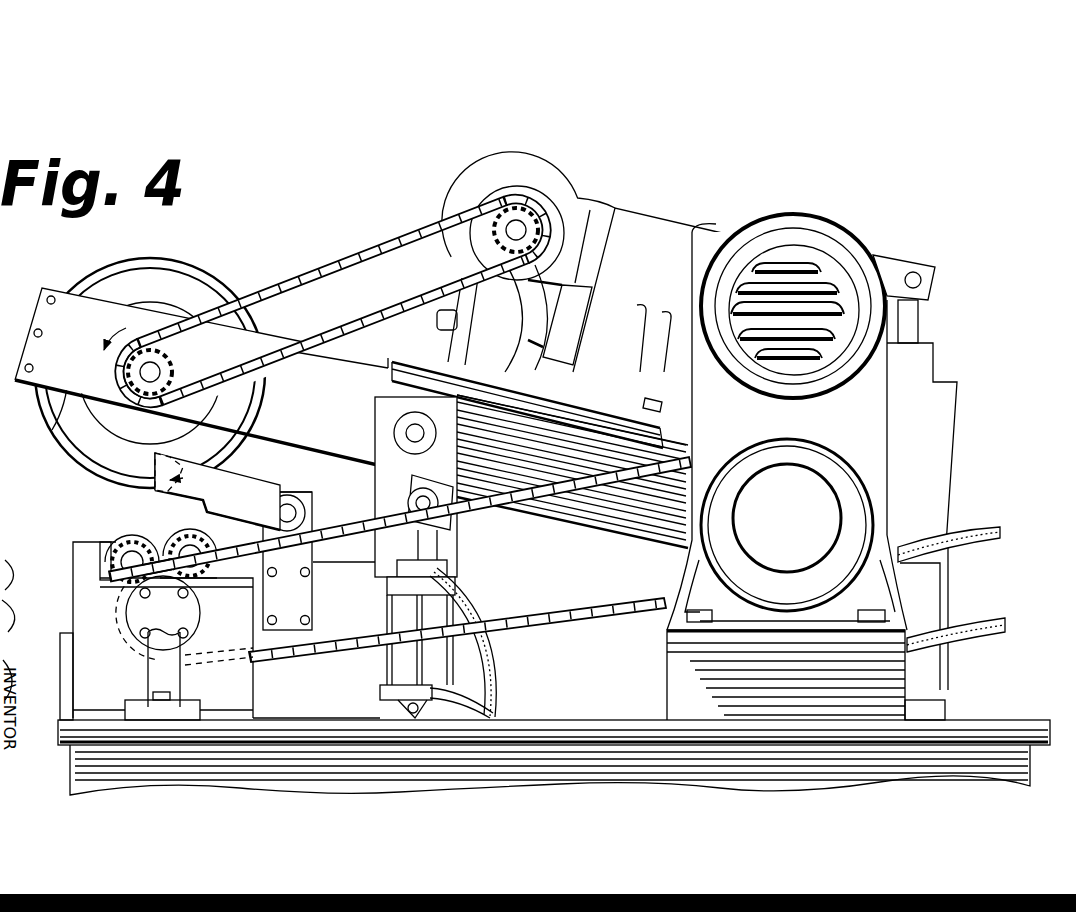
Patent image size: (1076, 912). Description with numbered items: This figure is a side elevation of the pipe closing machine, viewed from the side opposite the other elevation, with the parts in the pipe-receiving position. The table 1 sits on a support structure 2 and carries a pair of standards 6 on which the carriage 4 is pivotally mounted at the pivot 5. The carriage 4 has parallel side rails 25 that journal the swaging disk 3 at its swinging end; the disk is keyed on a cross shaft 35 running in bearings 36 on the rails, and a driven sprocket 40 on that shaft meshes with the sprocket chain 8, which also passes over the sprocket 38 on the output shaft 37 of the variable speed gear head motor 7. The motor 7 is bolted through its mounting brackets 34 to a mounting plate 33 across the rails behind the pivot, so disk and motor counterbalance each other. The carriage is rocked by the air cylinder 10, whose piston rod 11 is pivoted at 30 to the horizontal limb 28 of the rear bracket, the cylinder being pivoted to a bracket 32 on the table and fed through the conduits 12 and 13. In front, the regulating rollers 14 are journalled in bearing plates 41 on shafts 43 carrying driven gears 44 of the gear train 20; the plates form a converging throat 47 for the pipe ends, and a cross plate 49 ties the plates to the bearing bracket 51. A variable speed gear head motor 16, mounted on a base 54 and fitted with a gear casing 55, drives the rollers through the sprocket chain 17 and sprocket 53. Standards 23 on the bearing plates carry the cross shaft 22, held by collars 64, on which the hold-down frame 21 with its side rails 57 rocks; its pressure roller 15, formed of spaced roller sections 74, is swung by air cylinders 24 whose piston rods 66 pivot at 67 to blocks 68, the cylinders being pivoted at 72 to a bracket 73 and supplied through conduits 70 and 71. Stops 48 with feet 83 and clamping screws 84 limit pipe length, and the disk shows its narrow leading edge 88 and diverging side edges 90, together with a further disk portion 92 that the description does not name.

The table 1 is at (1025, 718).
The support structure 2 is at (822, 755).
The swaging disk 3 is at (194, 287).
The carriage 4 is at (51, 289).
The pivot 5 is at (414, 432).
The standards 6 is at (374, 429).
The gear head motor 7 is at (644, 228).
The sprocket chain 8 is at (410, 243).
The air cylinder 10 is at (925, 447).
The piston rod 11 is at (913, 318).
The conduit 12 is at (978, 532).
The conduit 13 is at (987, 622).
The regulating rollers 14 is at (126, 543).
The pressure roller 15 is at (243, 481).
The gear head motor 16 is at (794, 233).
The sprocket chain 17 is at (617, 612).
The gear train 20 is at (105, 562).
The hold-down frame 21 is at (286, 488).
The cross shaft 22 is at (297, 514).
The standards 23 is at (300, 608).
The air cylinders 24 is at (402, 663).
The side rails 25 is at (618, 497).
The horizontal limb 28 is at (890, 260).
The pivot 30 is at (921, 281).
The bracket 32 is at (942, 708).
The mounting plate 33 is at (582, 404).
The mounting brackets 34 is at (470, 366).
The cross shaft 35 is at (170, 390).
The bearings 36 is at (116, 373).
The output shaft 37 is at (519, 230).
The sprocket 38 is at (515, 221).
The driven sprocket 40 is at (170, 358).
The bearing plates 41 is at (316, 697).
The shafts 43 is at (135, 556).
The driven gear 44 is at (200, 546).
The throat 47 is at (164, 557).
The stops 48 is at (180, 684).
The cross plate 49 is at (71, 679).
The bearing bracket 51 is at (84, 605).
The sprocket 53 is at (184, 581).
The base 54 is at (688, 682).
The gear casing 55 is at (697, 582).
The side rails 57 is at (358, 520).
The collars 64 is at (293, 500).
The piston rod 66 is at (443, 554).
The pivot 67 is at (448, 507).
The block 68 is at (413, 488).
The conduit 70 is at (468, 697).
The conduit 71 is at (503, 655).
The pivot 72 is at (418, 721).
The bracket 73 is at (385, 699).
The roller sections 74 is at (153, 466).
The foot 83 is at (153, 722).
The clamping screw 84 is at (147, 696).
The leading edge 88 is at (53, 445).
The side edges 90 is at (138, 263).
The hub 92 is at (201, 303).